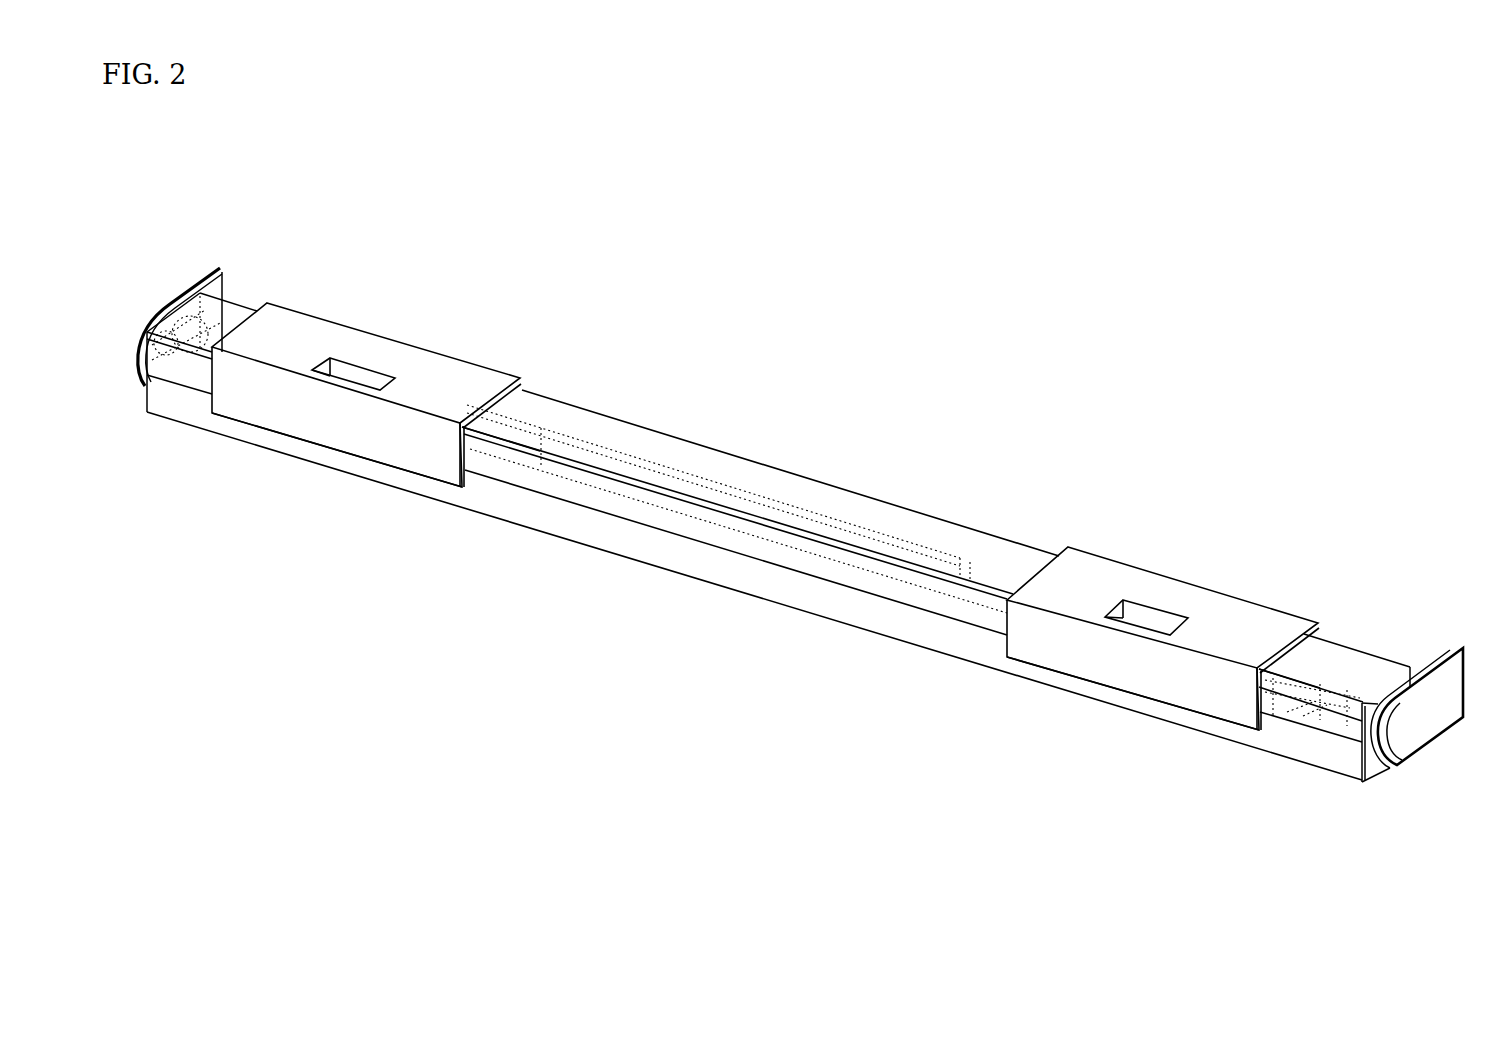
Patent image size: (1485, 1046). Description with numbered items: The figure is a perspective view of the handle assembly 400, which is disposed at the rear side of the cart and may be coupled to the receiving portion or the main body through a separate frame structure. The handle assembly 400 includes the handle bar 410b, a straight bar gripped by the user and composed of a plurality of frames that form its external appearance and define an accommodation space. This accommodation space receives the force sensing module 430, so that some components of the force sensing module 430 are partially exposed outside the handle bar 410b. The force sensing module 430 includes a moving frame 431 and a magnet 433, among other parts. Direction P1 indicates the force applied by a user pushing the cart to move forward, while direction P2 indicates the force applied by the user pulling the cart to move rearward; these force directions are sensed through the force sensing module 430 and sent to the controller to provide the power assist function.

The handle assembly 400 is at (287, 189).
The handle bar 410b is at (755, 492).
The direction of force for rear movement P2 is at (434, 342).
The direction of force for front movement P1 is at (323, 418).
The moving frame 431 is at (400, 452).
The magnet 433 is at (487, 452).
The force sensing module 430 is at (500, 575).